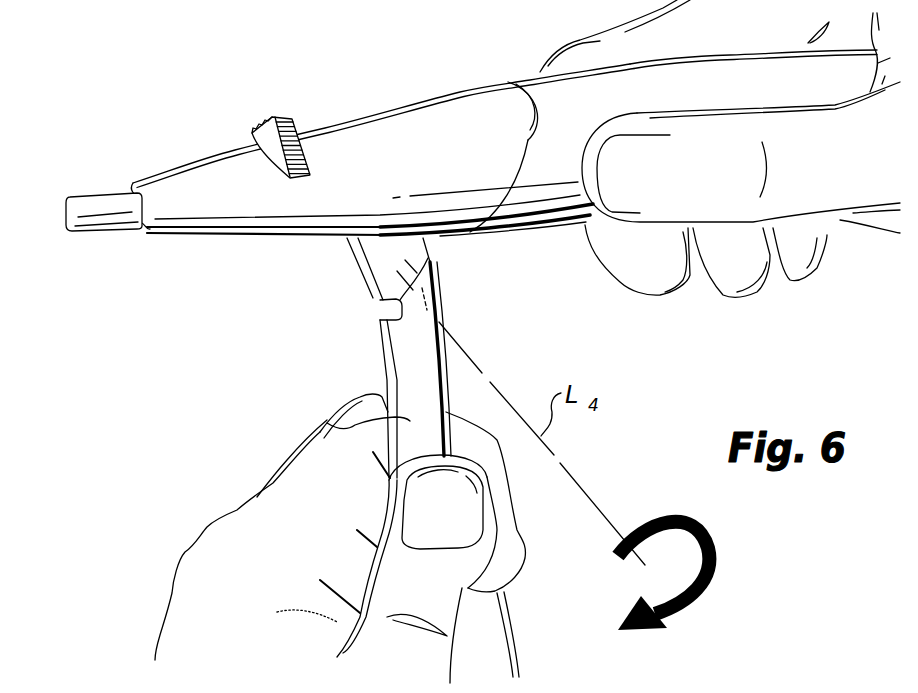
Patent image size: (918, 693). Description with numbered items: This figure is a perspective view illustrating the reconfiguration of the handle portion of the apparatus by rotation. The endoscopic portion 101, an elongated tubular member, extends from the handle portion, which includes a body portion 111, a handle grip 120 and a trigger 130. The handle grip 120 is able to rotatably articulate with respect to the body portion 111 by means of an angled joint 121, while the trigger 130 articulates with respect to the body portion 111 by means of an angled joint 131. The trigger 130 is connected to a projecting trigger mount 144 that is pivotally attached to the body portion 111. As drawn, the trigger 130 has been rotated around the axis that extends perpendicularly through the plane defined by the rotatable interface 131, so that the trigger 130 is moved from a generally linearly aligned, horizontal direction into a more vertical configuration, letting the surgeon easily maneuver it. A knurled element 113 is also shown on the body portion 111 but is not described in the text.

The endoscopic portion 101 is at (102, 207).
The body portion 111 is at (418, 113).
The knurled adjustment knob 113 is at (273, 116).
The handle grip 120 is at (755, 78).
The angled joint 121 is at (524, 80).
The trigger 130 is at (327, 423).
The angled joint 131 is at (380, 320).
The trigger mount 144 is at (372, 250).